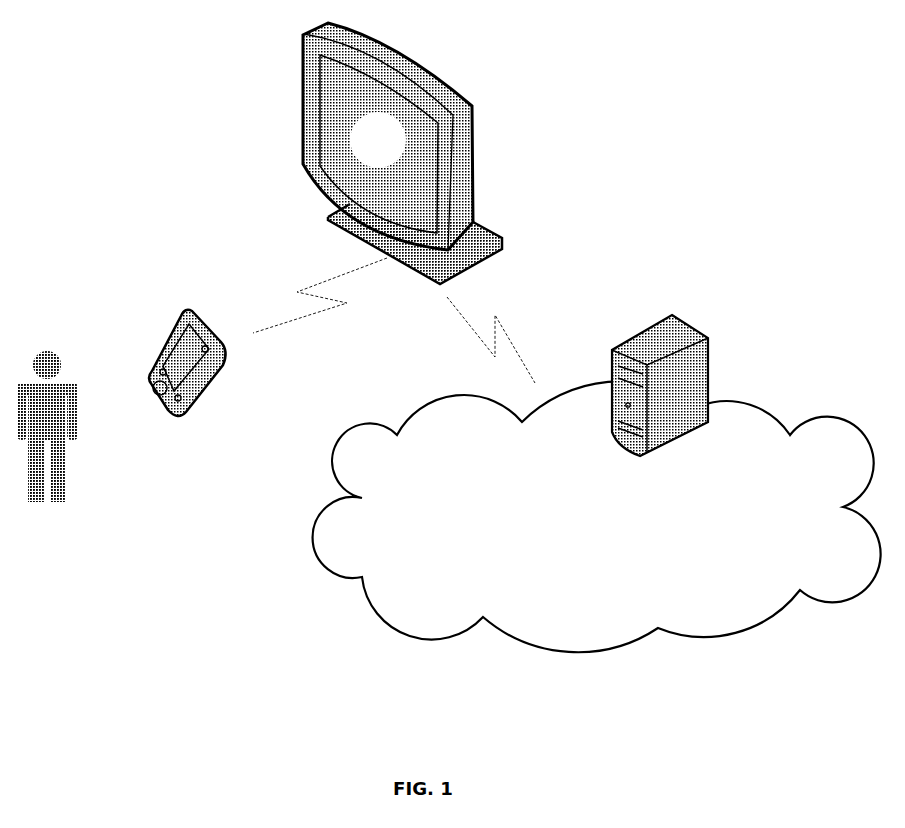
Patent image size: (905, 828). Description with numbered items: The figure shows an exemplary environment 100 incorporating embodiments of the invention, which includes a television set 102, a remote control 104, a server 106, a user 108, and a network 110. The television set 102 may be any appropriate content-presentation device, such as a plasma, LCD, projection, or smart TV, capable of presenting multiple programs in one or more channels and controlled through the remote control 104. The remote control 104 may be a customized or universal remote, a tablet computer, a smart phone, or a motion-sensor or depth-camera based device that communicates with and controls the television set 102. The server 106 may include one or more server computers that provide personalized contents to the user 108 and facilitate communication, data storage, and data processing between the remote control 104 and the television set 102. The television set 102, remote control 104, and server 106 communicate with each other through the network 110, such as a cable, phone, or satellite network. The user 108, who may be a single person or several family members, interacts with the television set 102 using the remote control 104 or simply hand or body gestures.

The environment 100 is at (125, 25).
The television set 102 is at (473, 130).
The remote control 104 is at (373, 343).
The server 106 is at (838, 338).
The user 108 is at (213, 458).
The network 110 is at (455, 508).